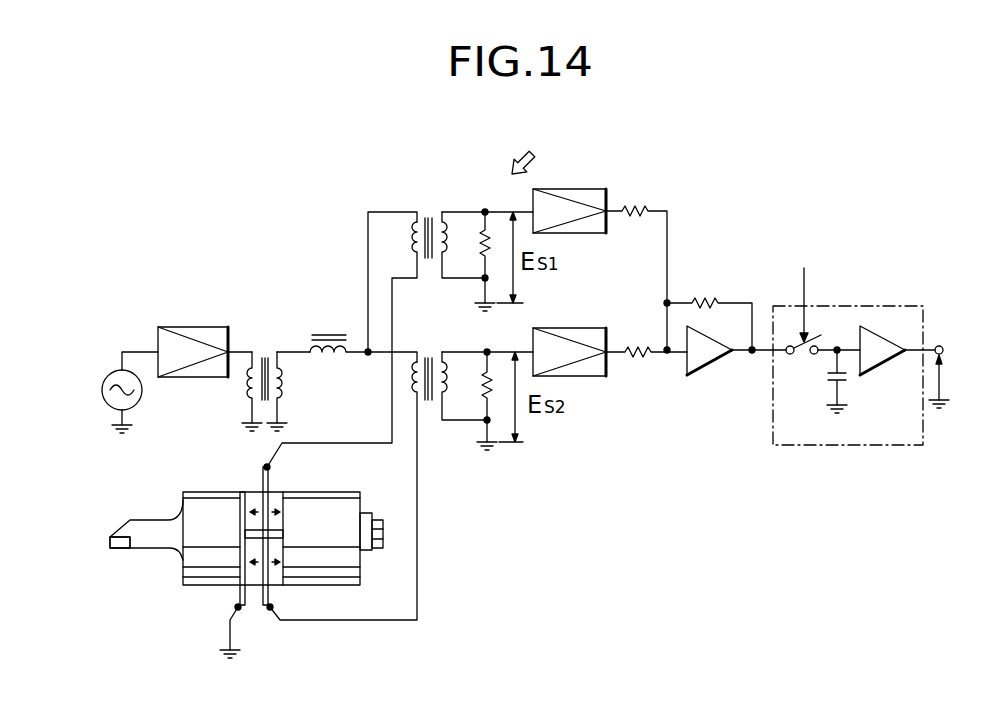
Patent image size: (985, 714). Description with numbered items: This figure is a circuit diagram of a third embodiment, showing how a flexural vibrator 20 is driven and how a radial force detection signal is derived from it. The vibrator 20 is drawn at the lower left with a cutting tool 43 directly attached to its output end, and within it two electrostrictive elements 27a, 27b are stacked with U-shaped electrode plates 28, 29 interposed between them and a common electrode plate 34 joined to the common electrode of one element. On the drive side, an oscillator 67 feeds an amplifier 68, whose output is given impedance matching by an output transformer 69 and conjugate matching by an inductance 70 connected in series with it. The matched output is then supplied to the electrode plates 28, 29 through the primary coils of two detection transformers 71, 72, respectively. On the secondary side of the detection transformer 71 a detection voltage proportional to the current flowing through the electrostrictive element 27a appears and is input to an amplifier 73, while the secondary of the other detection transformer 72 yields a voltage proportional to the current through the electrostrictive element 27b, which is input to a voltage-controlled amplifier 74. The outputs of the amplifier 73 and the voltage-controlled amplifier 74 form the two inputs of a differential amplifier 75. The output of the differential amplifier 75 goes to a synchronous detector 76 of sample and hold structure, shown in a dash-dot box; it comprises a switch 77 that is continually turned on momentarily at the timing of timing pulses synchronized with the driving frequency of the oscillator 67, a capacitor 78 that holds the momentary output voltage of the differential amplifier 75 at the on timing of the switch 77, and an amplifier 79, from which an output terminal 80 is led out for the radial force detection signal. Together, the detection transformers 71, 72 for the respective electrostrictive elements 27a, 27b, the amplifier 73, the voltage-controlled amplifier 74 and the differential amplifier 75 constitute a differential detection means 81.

The flexural vibrator 20 is at (197, 585).
The electrostrictive element 27a is at (250, 493).
The electrostrictive element 27b is at (256, 576).
The electrode plate 28 is at (258, 472).
The electrode plate 29 is at (270, 592).
The common electrode plate 34 is at (242, 594).
The cutting tool 43 is at (123, 537).
The oscillator 67 is at (110, 376).
The amplifier 68 is at (202, 332).
The output transformer 69 is at (260, 358).
The inductance 70 is at (326, 335).
The detection transformer 71 is at (424, 220).
The detection transformer 72 is at (428, 404).
The amplifier 73 is at (584, 193).
The voltage-controlled amplifier 74 is at (588, 328).
The differential amplifier 75 is at (707, 364).
The synchronous detector 76 is at (907, 306).
The switch 77 is at (803, 353).
The capacitor 78 is at (847, 378).
The amplifier 79 is at (887, 360).
The output terminal 80 is at (942, 344).
The differential detection means 81 is at (527, 144).